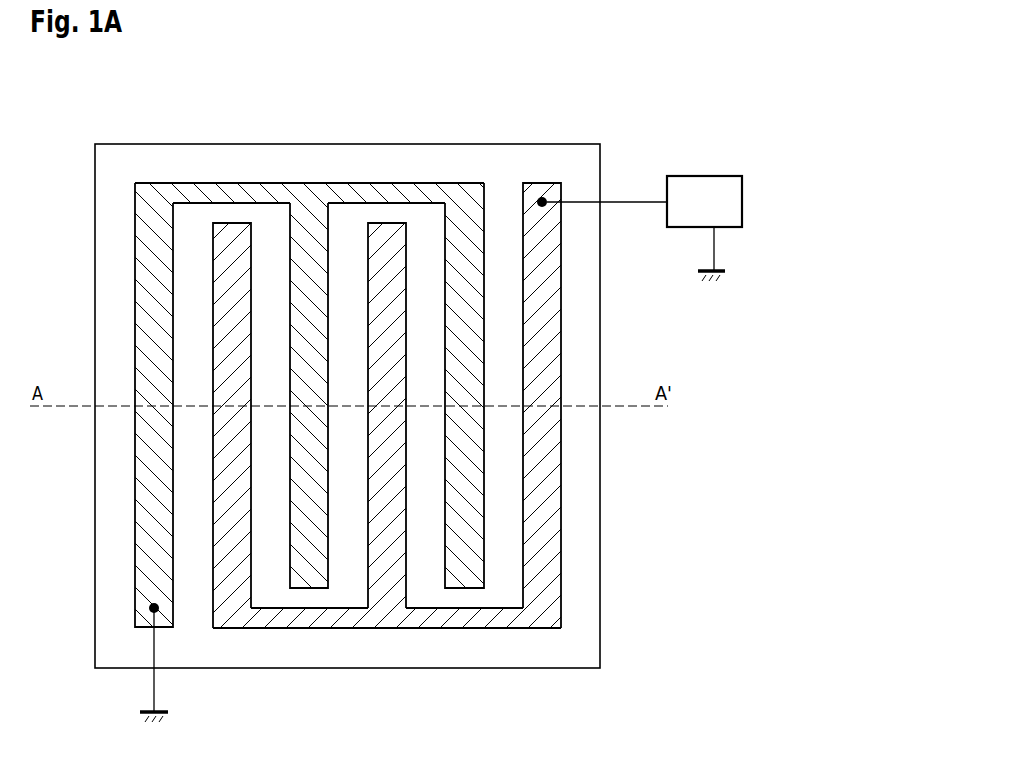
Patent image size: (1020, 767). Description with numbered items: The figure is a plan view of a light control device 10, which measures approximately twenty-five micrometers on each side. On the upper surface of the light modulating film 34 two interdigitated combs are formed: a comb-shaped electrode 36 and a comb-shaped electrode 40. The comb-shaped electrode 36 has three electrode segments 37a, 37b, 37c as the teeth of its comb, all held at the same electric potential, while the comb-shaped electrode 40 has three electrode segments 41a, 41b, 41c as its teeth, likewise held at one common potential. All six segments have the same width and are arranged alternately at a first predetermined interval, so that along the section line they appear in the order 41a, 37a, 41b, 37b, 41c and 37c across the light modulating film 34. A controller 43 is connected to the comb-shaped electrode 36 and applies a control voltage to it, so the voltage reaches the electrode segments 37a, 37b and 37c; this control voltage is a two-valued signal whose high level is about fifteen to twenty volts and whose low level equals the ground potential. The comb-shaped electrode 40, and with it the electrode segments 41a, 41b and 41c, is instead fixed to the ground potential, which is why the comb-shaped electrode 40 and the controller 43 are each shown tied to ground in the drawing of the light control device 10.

The light control device 10 is at (469, 672).
The light modulating film 34 is at (588, 635).
The comb-shaped electrode 36 is at (543, 183).
The electrode segment 37a is at (241, 556).
The electrode segment 37b is at (397, 555).
The electrode segment 37c is at (552, 555).
The comb-shaped electrode 40 is at (475, 183).
The electrode segment 41a is at (153, 557).
The electrode segment 41b is at (310, 556).
The electrode segment 41c is at (462, 555).
The controller 43 is at (716, 176).